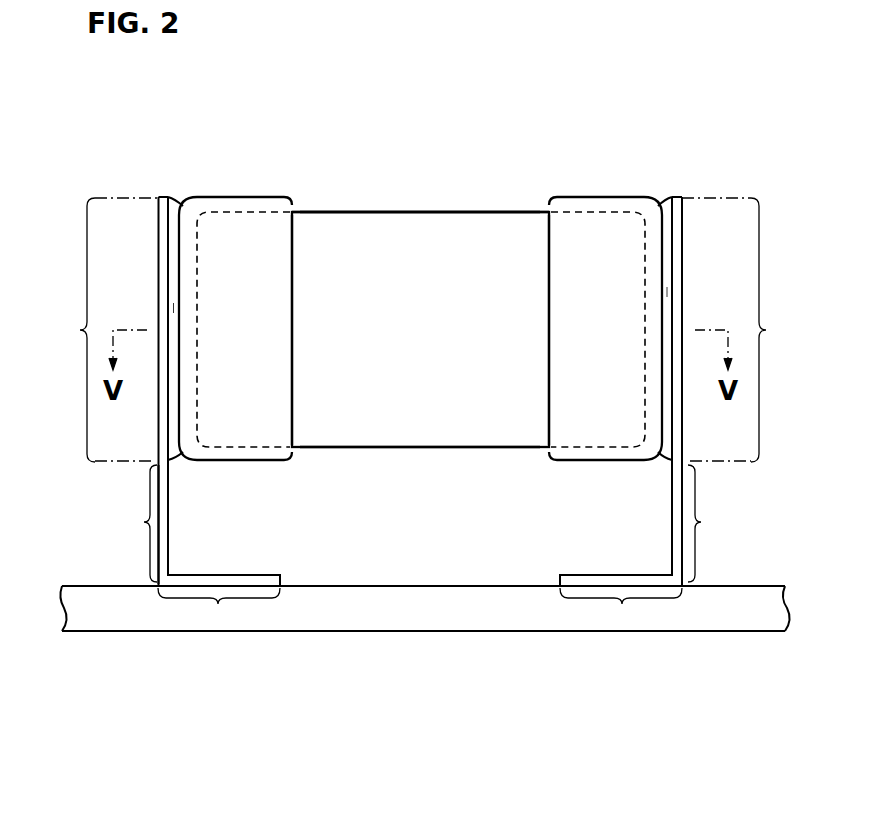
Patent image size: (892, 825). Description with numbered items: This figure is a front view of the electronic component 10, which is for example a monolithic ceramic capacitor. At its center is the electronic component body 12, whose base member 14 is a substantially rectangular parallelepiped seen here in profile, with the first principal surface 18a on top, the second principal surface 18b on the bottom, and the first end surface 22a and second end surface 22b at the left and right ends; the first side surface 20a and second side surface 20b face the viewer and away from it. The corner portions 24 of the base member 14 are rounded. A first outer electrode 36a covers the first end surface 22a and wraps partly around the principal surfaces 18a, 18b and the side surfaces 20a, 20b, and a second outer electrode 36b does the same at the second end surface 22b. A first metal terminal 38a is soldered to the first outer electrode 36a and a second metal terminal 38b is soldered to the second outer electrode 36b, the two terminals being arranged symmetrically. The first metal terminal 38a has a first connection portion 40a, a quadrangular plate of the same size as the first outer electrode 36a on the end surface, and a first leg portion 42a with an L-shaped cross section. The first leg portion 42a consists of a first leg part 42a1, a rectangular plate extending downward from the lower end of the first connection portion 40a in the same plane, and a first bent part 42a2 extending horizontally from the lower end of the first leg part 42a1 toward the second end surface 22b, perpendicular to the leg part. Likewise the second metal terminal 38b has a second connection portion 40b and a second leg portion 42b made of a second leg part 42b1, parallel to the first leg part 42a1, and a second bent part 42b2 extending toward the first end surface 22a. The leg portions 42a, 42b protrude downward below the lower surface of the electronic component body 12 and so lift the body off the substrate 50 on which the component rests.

The electronic component 10 is at (416, 299).
The electronic component body 12 is at (314, 206).
The base member 14 is at (362, 210).
The first principal surface 18a is at (470, 211).
The second principal surface 18b is at (470, 447).
The first side surface 20a is at (352, 405).
The second side surface 20b is at (400, 405).
The first end surface 22a is at (195, 290).
The second end surface 22b is at (650, 268).
The corner portions 24 is at (190, 195).
The first outer electrode 36a is at (250, 196).
The second outer electrode 36b is at (587, 196).
The first metal terminal 38a is at (165, 196).
The second metal terminal 38b is at (677, 196).
The first connection portion 40a is at (153, 443).
The second connection portion 40b is at (691, 441).
The first leg portion 42a is at (189, 599).
The first leg part 42a1 is at (144, 522).
The first bent part 42a2 is at (219, 633).
The second leg portion 42b is at (658, 598).
The second leg part 42b1 is at (701, 522).
The second bent part 42b2 is at (621, 632).
The substrate 50 is at (393, 585).